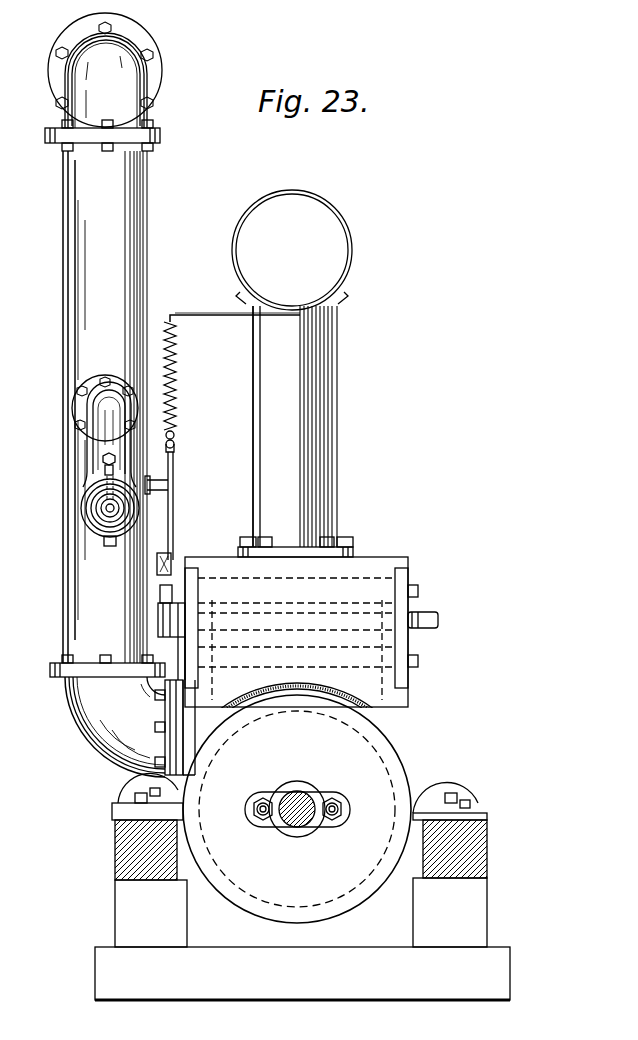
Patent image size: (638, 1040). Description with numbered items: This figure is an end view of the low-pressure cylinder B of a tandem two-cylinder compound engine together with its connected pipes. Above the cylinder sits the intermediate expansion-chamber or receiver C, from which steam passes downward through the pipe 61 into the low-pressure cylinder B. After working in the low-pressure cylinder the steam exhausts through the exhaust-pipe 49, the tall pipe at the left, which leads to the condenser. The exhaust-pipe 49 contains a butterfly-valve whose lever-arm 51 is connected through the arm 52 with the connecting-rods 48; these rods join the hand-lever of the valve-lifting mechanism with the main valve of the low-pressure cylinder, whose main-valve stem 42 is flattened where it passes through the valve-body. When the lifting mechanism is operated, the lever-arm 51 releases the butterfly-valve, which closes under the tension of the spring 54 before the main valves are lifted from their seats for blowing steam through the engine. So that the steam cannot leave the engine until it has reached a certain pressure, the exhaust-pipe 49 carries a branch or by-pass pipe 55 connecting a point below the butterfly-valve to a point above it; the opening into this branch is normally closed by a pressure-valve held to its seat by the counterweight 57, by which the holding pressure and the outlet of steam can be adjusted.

The exhaust-pipe 49 is at (150, 209).
The expansion-chamber or receiver C is at (333, 243).
The spring 54 is at (180, 382).
The pipe 61 is at (335, 400).
The lever-arm 51 is at (175, 433).
The branch or by-pass pipe 55 is at (103, 440).
The arm 52 is at (173, 508).
The counterweight 57 is at (100, 508).
The connecting-rods 48 is at (168, 557).
The main-valve stem 42 is at (158, 620).
The low-pressure cylinder B is at (368, 760).